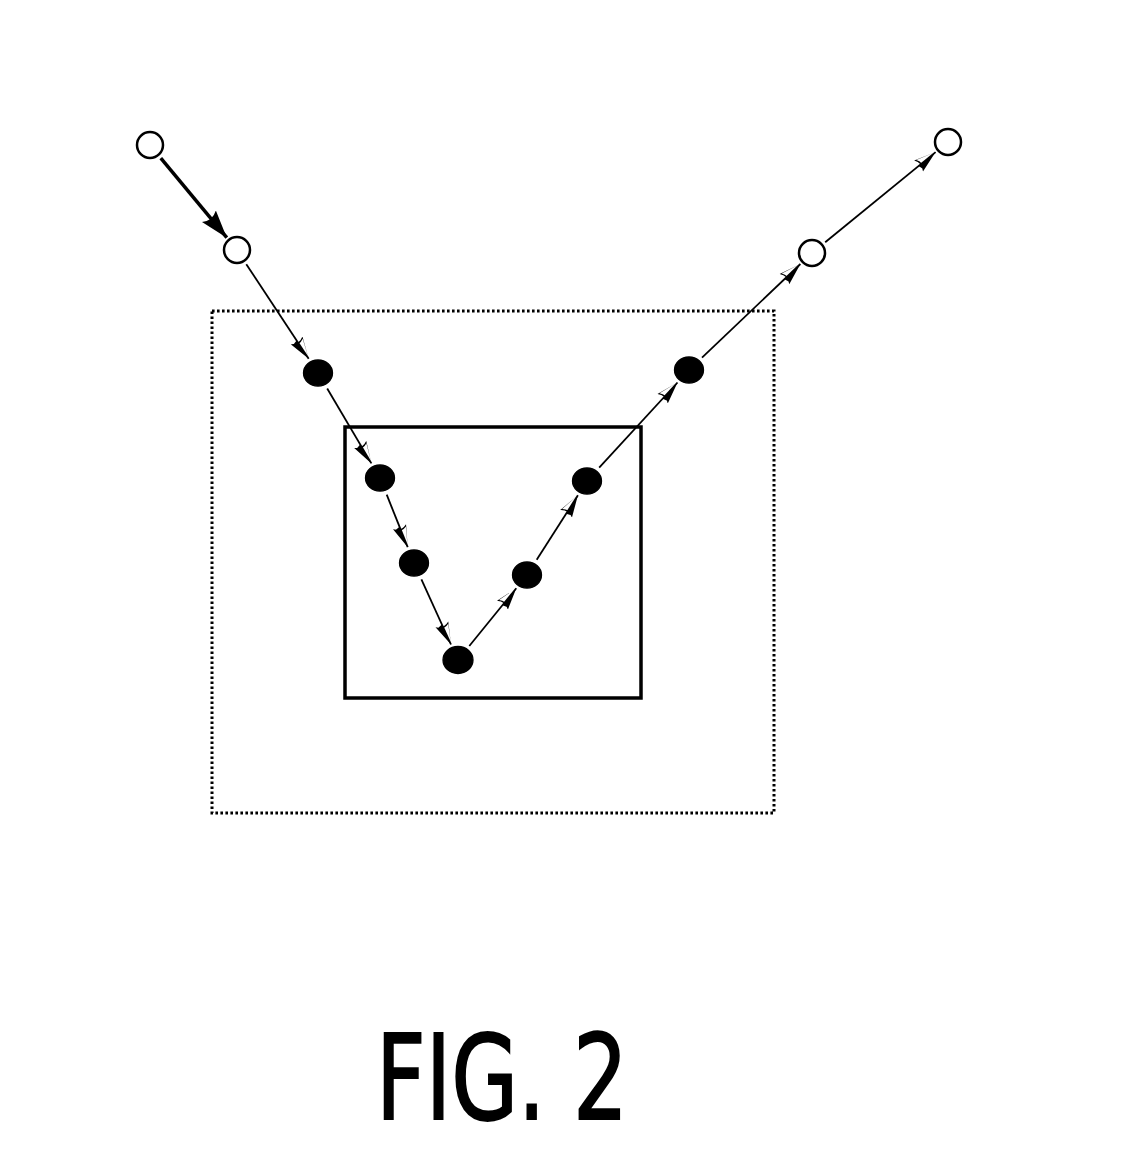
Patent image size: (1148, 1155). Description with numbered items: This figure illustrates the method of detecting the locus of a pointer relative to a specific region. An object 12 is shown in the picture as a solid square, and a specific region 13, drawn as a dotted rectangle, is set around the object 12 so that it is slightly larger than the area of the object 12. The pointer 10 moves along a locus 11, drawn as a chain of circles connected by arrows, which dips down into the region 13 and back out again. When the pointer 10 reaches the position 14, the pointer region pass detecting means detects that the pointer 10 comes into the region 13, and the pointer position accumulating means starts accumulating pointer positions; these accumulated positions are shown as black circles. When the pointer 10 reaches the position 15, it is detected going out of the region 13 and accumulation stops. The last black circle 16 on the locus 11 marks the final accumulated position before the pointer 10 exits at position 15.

The pointer 10 is at (138, 133).
The locus 11 is at (195, 190).
The object 12 is at (570, 700).
The specific region 13 is at (465, 815).
The position 14 is at (313, 388).
The position 15 is at (827, 267).
The last inner state node 16 is at (697, 383).